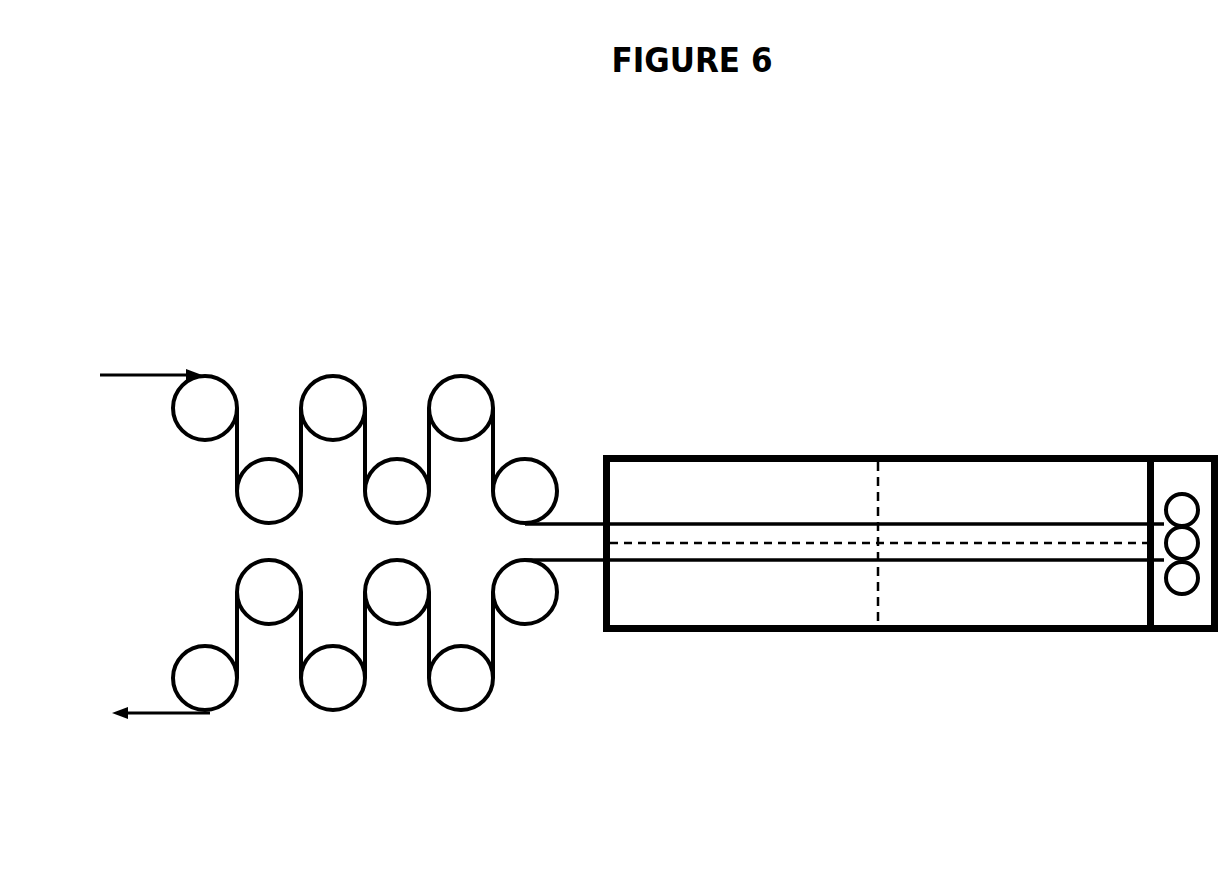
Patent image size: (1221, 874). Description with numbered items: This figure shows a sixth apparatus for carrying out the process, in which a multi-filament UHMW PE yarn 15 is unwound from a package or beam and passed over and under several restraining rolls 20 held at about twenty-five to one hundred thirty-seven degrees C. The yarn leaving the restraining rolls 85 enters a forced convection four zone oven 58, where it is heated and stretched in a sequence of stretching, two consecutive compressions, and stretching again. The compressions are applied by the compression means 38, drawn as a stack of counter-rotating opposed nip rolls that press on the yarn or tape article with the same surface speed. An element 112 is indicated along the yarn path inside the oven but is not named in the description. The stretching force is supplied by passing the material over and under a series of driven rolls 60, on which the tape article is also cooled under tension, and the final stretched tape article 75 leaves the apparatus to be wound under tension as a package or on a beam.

The multi-filament UHMW PE yarn 15 is at (145, 372).
The restraining rolls 20 is at (447, 377).
The driven rolls 60 is at (225, 715).
The final stretched tape article 75 is at (145, 718).
The yarn leaving the restraining rolls 85 is at (578, 523).
The center line 112 is at (920, 562).
The four zone oven 58 is at (873, 455).
The compression means 38 is at (1181, 492).